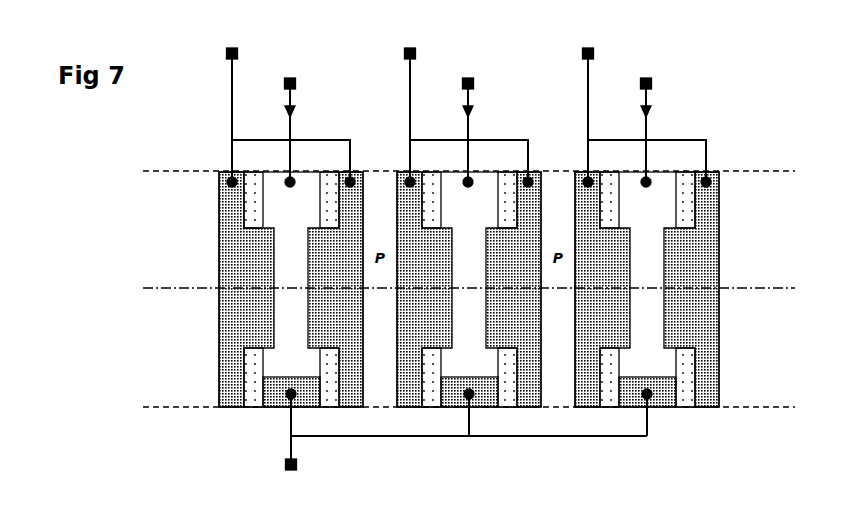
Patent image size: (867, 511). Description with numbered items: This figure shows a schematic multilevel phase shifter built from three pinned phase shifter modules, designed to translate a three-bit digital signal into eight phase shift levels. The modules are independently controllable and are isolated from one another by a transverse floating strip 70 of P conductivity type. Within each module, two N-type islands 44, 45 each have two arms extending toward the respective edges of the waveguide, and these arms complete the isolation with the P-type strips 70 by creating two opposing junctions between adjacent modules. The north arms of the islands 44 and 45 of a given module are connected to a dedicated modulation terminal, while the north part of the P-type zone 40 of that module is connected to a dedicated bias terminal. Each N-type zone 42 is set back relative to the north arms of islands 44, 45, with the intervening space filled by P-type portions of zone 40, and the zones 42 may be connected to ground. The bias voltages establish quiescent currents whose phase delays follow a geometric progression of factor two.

The transverse floating strip 70 is at (385, 172).
The P-type zone 40 is at (284, 221).
The N-type island 44 is at (243, 333).
The N-type island 45 is at (325, 333).
The N-type zone 42 is at (308, 408).